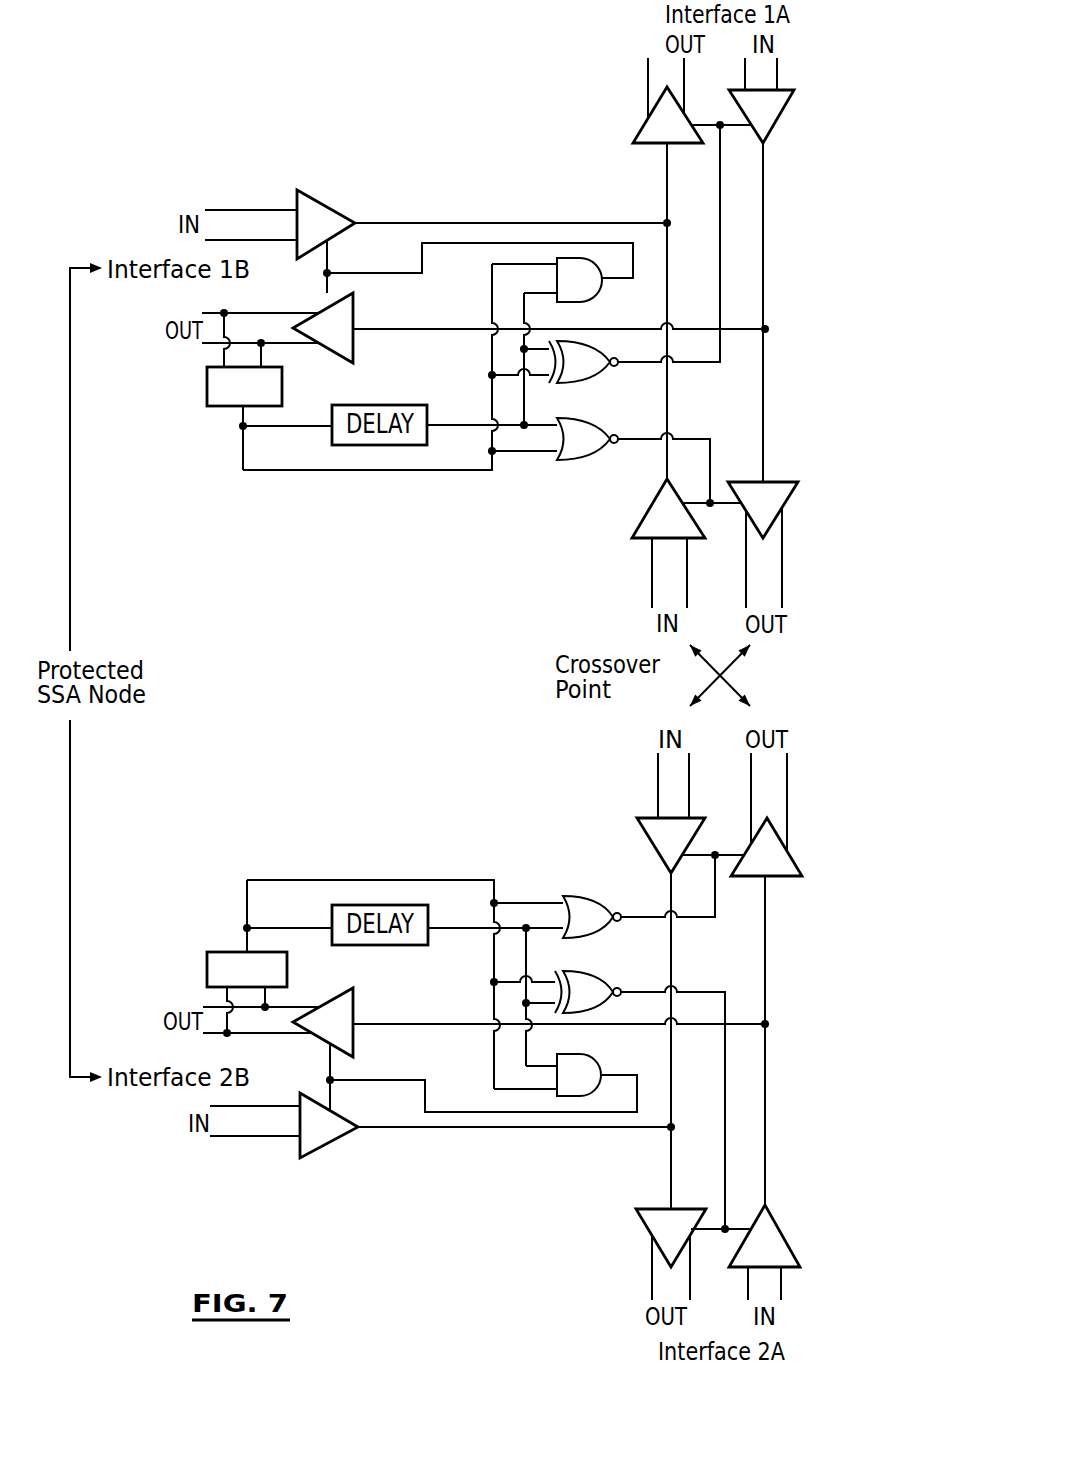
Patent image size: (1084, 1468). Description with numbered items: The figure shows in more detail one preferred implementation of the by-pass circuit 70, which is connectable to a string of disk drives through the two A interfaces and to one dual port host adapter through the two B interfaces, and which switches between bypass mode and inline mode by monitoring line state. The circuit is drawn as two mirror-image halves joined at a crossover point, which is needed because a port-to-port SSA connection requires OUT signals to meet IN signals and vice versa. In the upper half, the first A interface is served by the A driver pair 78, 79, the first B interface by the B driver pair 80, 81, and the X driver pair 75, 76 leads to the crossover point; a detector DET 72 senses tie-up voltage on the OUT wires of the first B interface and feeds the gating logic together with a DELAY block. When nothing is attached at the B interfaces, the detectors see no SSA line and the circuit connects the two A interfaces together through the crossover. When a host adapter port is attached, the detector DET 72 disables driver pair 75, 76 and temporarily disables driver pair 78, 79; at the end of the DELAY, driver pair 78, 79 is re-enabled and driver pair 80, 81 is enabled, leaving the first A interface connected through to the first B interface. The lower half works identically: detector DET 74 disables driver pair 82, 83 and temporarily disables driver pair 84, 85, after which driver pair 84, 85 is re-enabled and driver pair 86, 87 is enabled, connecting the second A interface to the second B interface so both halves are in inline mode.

The by-pass circuit 70 is at (476, 158).
The detector DET 72 is at (227, 406).
The detector DET 74 is at (221, 952).
The driver 75 is at (646, 517).
The driver 76 is at (789, 503).
The driver 78 is at (640, 127).
The driver 79 is at (782, 116).
The driver 80 is at (332, 211).
The driver 81 is at (351, 345).
The driver 82 is at (642, 828).
The driver 83 is at (790, 857).
The driver 84 is at (641, 1232).
The driver 85 is at (795, 1242).
The driver 86 is at (356, 1010).
The driver 87 is at (325, 1146).